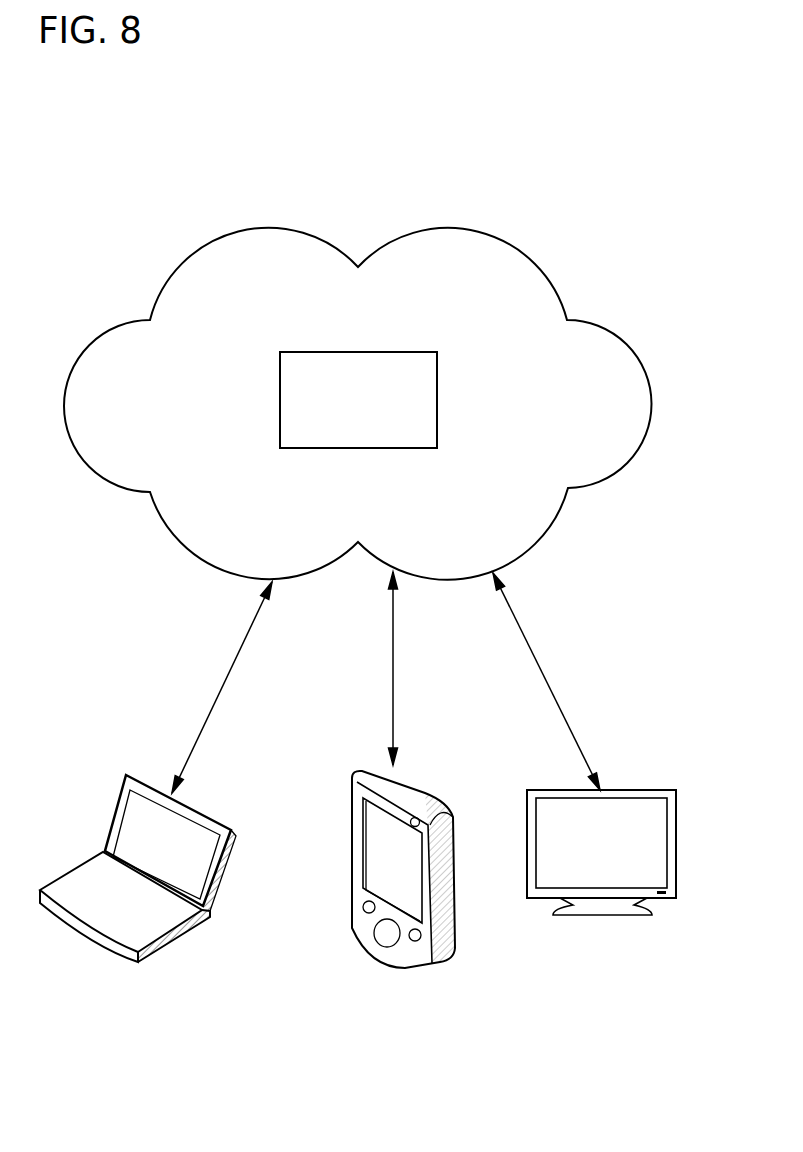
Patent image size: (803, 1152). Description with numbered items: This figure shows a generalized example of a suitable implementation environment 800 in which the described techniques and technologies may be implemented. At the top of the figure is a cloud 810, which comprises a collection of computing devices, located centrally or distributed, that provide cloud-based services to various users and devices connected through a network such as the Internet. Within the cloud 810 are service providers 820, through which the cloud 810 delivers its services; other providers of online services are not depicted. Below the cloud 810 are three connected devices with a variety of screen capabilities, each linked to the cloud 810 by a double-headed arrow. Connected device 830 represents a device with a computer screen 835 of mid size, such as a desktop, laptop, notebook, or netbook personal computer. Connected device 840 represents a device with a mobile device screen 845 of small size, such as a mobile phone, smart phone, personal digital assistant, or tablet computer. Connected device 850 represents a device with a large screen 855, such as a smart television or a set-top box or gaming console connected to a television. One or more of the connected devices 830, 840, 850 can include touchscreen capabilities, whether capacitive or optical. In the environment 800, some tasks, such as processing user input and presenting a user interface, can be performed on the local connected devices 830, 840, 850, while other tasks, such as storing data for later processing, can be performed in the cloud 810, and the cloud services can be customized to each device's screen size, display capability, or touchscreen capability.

The implementation environment 800 is at (625, 225).
The cloud 810 is at (342, 327).
The service providers 820 is at (342, 436).
The connected device 830 is at (50, 882).
The computer screen 835 is at (146, 857).
The connected device 840 is at (361, 762).
The mobile device screen 845 is at (378, 874).
The connected device 850 is at (657, 789).
The large screen 855 is at (585, 854).